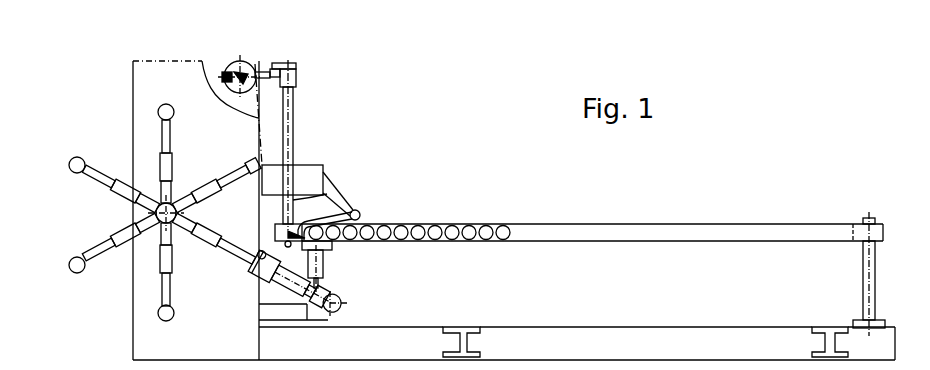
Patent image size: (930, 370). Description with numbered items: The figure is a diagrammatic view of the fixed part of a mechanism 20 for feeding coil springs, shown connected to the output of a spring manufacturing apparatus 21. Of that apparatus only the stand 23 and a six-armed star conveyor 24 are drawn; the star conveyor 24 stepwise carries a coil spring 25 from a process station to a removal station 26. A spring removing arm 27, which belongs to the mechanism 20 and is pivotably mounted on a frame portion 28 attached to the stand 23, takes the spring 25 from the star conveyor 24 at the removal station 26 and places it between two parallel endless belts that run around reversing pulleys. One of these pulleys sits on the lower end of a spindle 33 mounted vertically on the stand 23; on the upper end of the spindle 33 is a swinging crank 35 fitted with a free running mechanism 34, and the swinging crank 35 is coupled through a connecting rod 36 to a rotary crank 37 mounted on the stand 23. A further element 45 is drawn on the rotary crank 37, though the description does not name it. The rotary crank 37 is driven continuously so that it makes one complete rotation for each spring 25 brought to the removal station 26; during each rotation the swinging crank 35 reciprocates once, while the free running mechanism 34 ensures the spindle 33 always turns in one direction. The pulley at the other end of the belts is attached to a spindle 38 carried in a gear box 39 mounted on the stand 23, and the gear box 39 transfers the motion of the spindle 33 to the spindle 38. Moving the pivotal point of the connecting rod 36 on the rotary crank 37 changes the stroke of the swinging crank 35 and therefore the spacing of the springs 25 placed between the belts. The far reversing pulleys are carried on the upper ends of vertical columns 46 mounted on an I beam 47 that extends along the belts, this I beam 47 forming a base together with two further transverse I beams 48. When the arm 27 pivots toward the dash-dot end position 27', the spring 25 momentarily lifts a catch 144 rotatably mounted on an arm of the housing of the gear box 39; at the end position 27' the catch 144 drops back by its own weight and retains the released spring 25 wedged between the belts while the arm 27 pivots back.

The mechanism 20 is at (494, 186).
The spring manufacturing apparatus 21 is at (165, 61).
The stand 23 is at (143, 92).
The six-armed star conveyor 24 is at (130, 228).
The coil spring 25 is at (70, 169).
The removal station 26 is at (242, 267).
The spring removing arm 27 is at (285, 290).
The end position of removing arm 27' is at (339, 266).
The frame portion 28 is at (289, 312).
The spindle 33 is at (292, 131).
The free running mechanism 34 is at (297, 82).
The swinging crank 35 is at (297, 66).
The connecting rod 36 is at (262, 66).
The rotary crank 37 is at (226, 72).
The spindle 38 is at (353, 205).
The gear box 39 is at (318, 166).
The cam 45 is at (241, 70).
The vertical columns 46 is at (864, 277).
The I beam 47 is at (740, 336).
The I beams 48 is at (470, 328).
The catch 144 is at (372, 241).